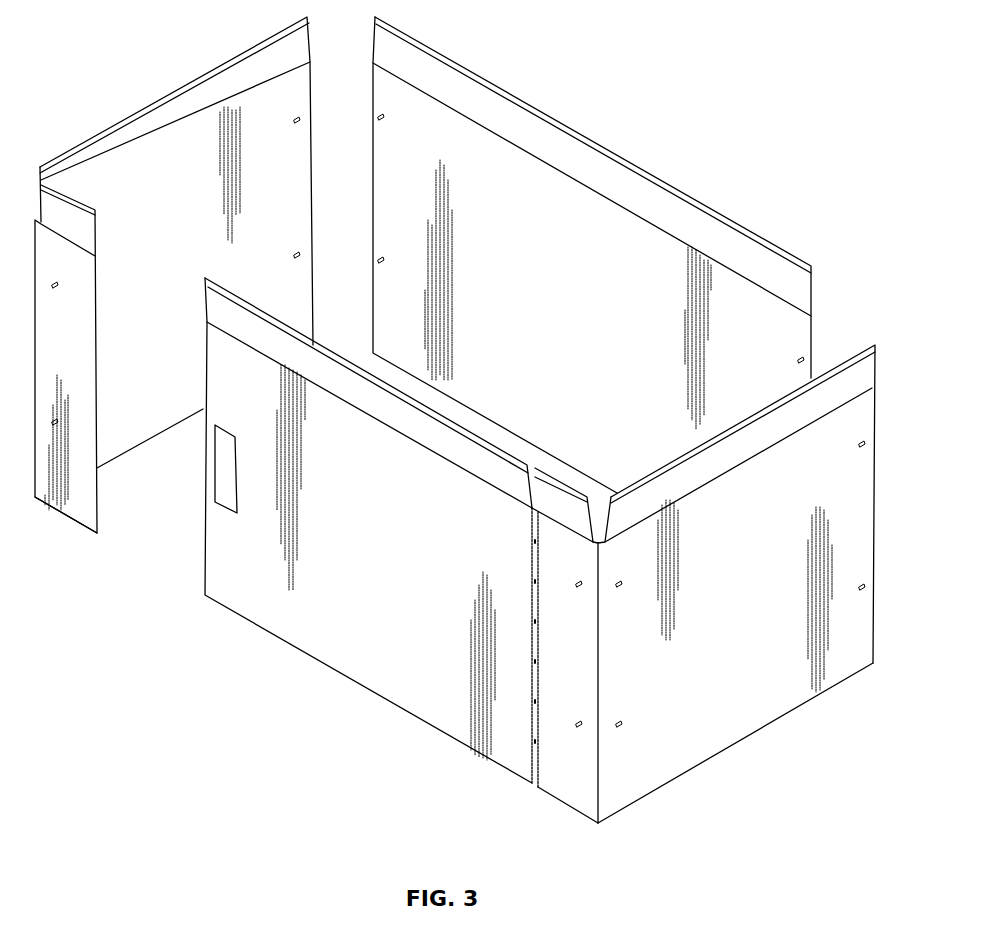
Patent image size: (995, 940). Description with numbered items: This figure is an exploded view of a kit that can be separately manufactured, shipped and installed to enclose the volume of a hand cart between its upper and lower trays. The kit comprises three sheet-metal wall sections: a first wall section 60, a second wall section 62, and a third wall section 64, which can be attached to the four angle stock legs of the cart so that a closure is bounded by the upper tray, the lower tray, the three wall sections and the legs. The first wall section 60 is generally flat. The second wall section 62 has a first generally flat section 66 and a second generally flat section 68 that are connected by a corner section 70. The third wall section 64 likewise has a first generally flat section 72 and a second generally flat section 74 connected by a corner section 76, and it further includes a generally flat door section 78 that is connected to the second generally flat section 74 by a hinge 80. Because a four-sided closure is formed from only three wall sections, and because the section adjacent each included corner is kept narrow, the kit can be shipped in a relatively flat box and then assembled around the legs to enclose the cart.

The first wall section 60 is at (603, 145).
The second wall section 62 is at (153, 100).
The third wall section 64 is at (835, 482).
The first generally flat section 66 is at (130, 423).
The second generally flat section 68 is at (72, 497).
The corner section 70 is at (33, 482).
The first generally flat section 72 is at (752, 712).
The second generally flat section 74 is at (573, 786).
The corner section 76 is at (602, 802).
The door section 78 is at (347, 652).
The hinge 80 is at (525, 752).